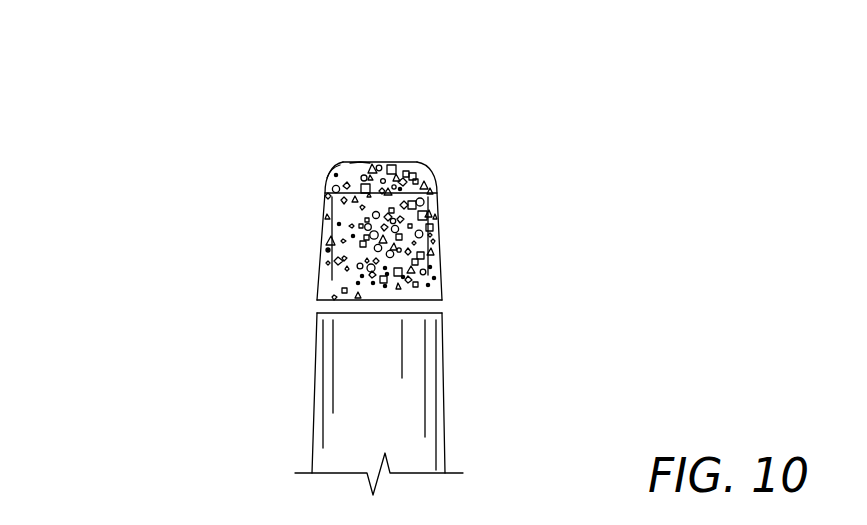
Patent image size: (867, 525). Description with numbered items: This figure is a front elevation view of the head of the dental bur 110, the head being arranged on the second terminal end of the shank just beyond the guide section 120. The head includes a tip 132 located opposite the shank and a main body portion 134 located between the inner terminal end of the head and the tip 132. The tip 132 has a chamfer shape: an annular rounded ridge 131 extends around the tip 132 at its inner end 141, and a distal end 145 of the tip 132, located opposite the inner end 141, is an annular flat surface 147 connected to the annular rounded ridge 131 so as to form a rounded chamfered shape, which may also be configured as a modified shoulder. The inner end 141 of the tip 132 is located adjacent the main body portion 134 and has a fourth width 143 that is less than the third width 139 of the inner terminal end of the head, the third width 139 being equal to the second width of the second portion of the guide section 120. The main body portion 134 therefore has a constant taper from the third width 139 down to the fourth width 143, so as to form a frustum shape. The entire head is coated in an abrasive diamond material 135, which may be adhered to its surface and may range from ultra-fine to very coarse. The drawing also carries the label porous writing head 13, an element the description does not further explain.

The dental bur 110 is at (155, 136).
The guide section 120 is at (478, 412).
The porous writing head 13 is at (298, 300).
The annular rounded ridge 131 is at (442, 164).
The tip 132 is at (408, 150).
The annular flat surface 147 is at (357, 148).
The distal end 145 is at (327, 157).
The inner end 141 is at (450, 191).
The fourth width 143 is at (362, 178).
The abrasive diamond material 135 is at (326, 250).
The main body portion 134 is at (459, 300).
The third width 139 is at (382, 303).